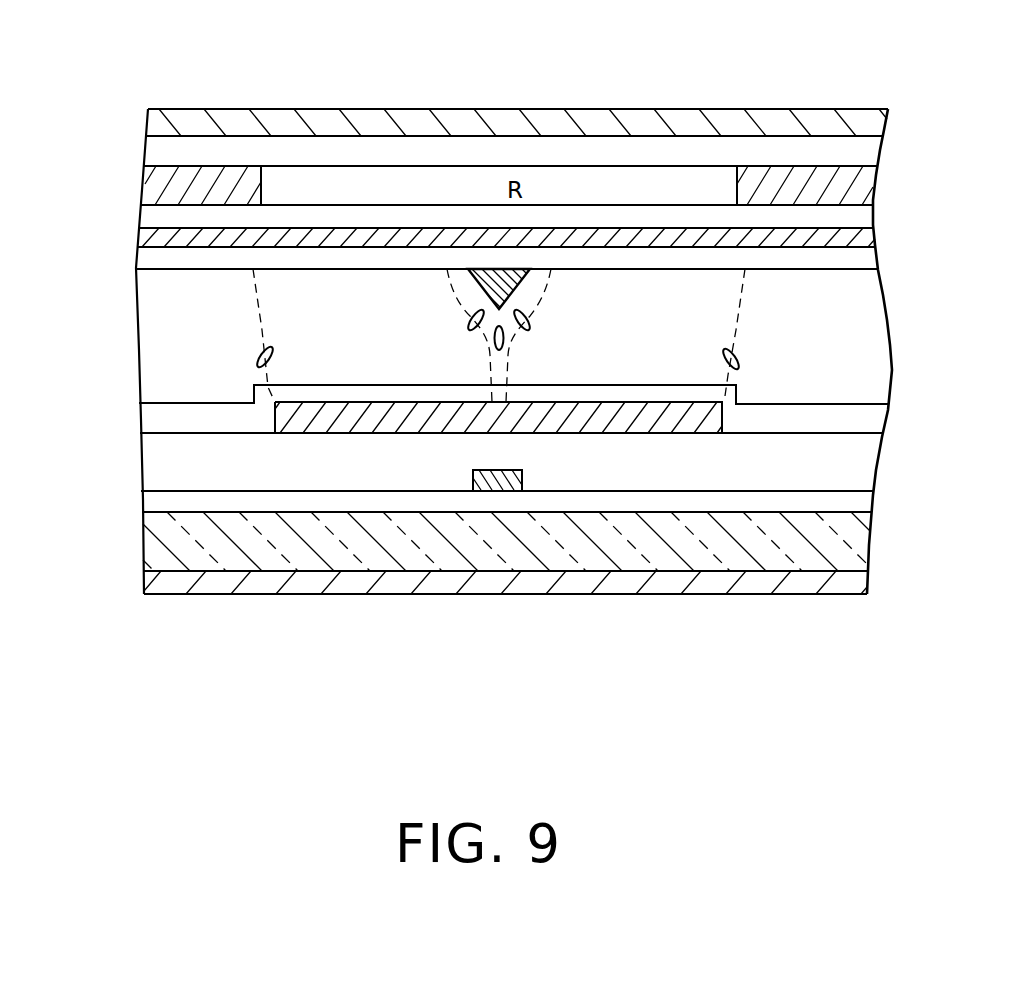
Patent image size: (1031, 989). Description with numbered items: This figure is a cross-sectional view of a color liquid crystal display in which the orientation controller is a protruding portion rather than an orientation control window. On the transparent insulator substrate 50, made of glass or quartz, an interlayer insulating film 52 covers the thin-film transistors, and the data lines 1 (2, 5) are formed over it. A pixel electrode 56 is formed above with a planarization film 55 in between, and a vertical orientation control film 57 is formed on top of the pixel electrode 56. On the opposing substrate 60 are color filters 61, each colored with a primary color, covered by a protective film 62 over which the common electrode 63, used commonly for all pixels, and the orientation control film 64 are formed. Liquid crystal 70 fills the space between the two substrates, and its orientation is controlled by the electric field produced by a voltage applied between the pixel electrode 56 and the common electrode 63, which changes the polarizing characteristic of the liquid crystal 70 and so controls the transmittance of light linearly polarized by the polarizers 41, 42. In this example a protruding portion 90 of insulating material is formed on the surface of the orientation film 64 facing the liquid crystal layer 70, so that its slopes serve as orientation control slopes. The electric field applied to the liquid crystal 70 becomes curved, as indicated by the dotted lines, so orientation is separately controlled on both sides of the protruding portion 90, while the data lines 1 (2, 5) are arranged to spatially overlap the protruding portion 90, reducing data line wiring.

The data line 1 is at (471, 598).
The data line 2 is at (471, 598).
The data line 5 is at (500, 482).
The polarizer 41 is at (863, 593).
The polarizer 42 is at (868, 123).
The transparent insulator substrate 50 is at (863, 555).
The interlayer insulating film 52 is at (863, 512).
The planarization film 55 is at (863, 462).
The pixel electrode 56 is at (532, 420).
The vertical orientation control film 57 is at (730, 397).
The substrate 60 is at (863, 149).
The color filter 61 is at (697, 178).
The protective film 62 is at (863, 217).
The common electrode 63 is at (863, 237).
The orientation control film 64 is at (863, 255).
The liquid crystal 70 is at (865, 306).
The protruding portion 90 is at (490, 277).